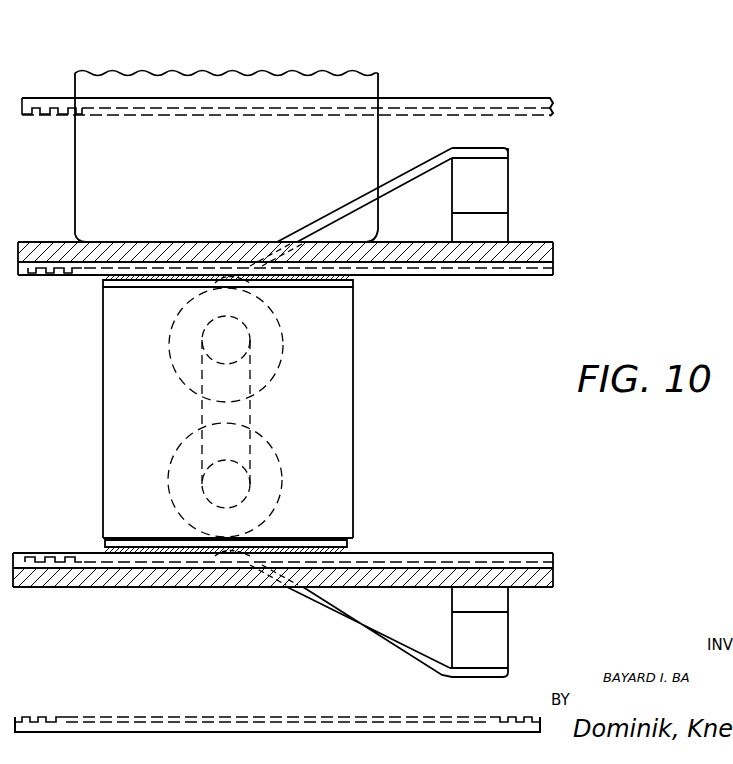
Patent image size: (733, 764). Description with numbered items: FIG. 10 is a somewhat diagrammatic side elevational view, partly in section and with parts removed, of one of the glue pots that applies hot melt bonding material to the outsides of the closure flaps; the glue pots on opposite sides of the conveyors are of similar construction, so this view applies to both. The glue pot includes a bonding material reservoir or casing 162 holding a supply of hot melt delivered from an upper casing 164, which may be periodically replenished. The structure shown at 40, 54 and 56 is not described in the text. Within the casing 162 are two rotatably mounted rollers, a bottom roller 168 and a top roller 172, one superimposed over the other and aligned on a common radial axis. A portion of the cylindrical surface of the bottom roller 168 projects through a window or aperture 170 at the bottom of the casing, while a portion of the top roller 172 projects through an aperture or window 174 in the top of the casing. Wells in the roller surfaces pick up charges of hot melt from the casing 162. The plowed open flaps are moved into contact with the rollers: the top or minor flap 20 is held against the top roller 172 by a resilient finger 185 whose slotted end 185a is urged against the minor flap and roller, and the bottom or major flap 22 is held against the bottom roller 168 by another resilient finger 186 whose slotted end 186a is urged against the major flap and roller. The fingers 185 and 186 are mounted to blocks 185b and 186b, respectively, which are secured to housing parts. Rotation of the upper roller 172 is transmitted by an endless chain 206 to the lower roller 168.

The guide rail tube 40 is at (237, 64).
The upper casing 164 is at (83, 167).
The resilient finger 185 is at (350, 195).
The slotted end 185a is at (233, 242).
The block 185b is at (500, 178).
The upper rail 54 is at (510, 277).
The aperture or window 174 is at (232, 287).
The top or minor flap 20 is at (355, 290).
The bonding material reservoir or casing 162 is at (120, 408).
The top roller 172 is at (283, 348).
The endless chain 206 is at (250, 410).
The bottom roller 168 is at (283, 474).
The bottom or major flap 22 is at (355, 538).
The window or aperture 170 is at (225, 540).
The lower rail 56 is at (525, 553).
The resilient finger 186 is at (355, 633).
The slotted end 186a is at (228, 587).
The block 186b is at (500, 628).